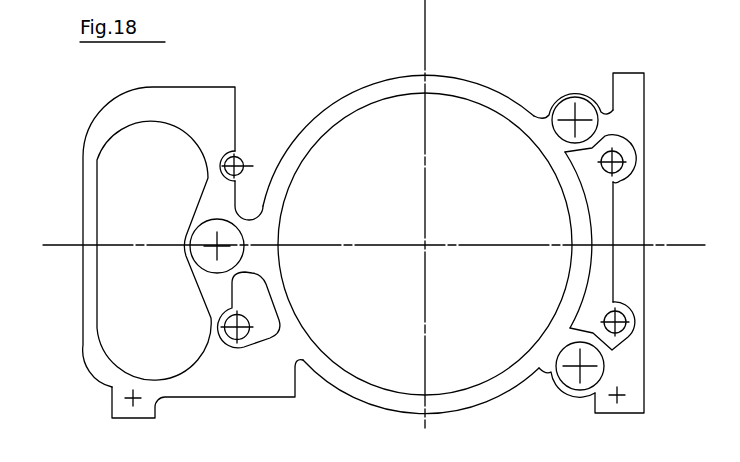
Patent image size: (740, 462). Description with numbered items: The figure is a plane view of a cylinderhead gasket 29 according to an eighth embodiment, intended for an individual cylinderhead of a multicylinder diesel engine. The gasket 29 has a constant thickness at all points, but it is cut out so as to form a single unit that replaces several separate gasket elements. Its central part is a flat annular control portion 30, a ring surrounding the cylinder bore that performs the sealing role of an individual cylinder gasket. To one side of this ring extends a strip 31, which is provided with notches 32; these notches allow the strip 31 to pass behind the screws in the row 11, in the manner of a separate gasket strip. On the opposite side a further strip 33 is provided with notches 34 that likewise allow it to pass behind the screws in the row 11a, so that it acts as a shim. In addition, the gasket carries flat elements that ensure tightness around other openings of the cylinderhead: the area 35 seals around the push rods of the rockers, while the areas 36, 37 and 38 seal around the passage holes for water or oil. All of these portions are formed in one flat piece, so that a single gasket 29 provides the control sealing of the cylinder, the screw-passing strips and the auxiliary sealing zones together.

The row of screws 11 is at (241, 161).
The row of screws 11a is at (625, 153).
The cylinderhead gasket 29 is at (474, 76).
The flat annular control portion 30 is at (368, 94).
The strip 31 is at (220, 127).
The notches 32 is at (218, 164).
The further strip 33 is at (630, 222).
The notches 34 is at (630, 163).
The area around the push rods 35 is at (90, 163).
The passage hole area 36 is at (193, 233).
The passage hole area 37 is at (575, 94).
The passage hole area 38 is at (276, 398).